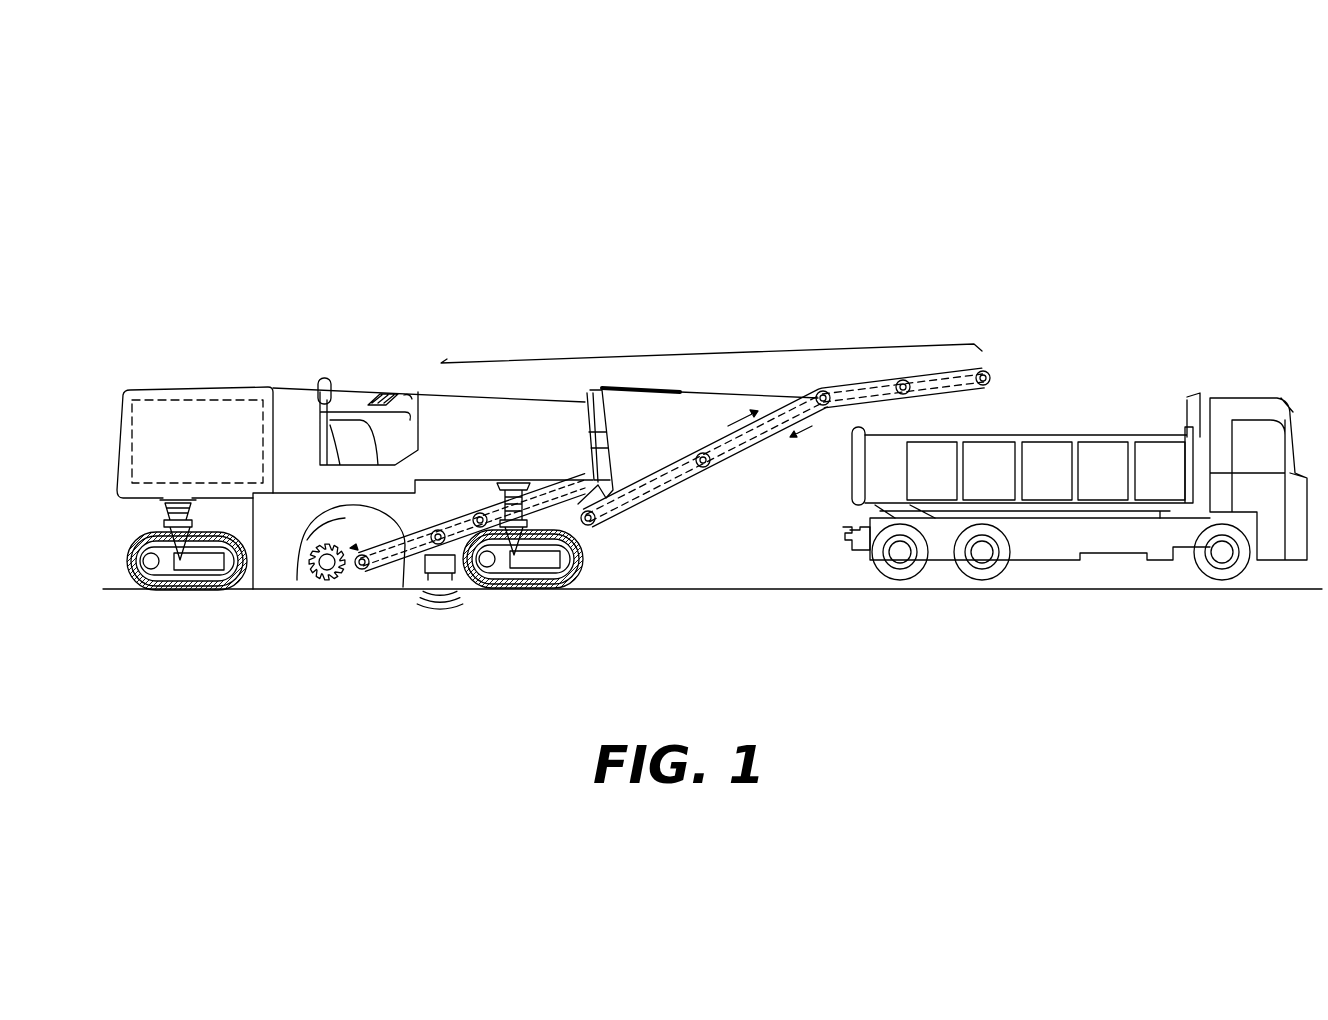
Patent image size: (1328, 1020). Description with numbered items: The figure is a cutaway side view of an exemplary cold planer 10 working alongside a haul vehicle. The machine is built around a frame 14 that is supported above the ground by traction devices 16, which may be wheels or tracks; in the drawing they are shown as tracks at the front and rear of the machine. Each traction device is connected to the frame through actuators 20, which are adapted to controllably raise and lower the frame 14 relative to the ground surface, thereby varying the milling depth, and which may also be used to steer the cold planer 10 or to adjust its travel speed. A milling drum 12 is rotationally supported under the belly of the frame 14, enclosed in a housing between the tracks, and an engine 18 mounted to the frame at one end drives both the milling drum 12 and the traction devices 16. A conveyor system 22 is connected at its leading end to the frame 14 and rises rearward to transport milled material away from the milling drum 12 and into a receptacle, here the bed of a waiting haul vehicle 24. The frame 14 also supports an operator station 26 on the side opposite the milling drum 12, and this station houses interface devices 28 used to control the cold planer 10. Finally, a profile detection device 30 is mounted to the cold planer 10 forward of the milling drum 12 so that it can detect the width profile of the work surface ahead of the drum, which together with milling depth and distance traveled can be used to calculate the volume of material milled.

The cold planer 10 is at (594, 258).
The milling drum 12 is at (348, 575).
The frame 14 is at (437, 395).
The traction devices 16 is at (247, 590).
The engine 18 is at (160, 388).
The actuators 20 is at (176, 532).
The conveyor system 22 is at (703, 352).
The haul vehicle 24 is at (1072, 382).
The operator station 26 is at (325, 364).
The interface devices 28 is at (366, 382).
The profile detection device 30 is at (466, 578).